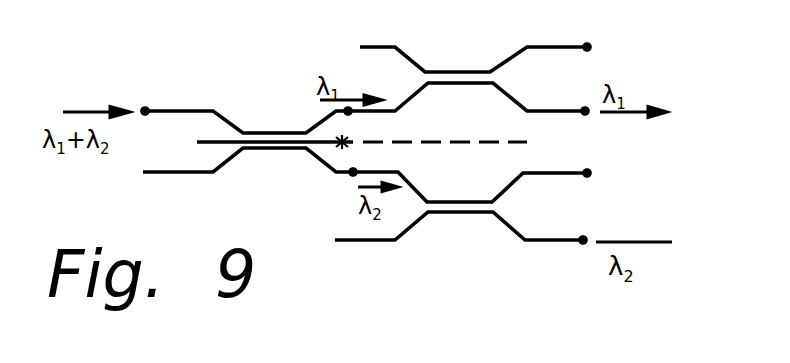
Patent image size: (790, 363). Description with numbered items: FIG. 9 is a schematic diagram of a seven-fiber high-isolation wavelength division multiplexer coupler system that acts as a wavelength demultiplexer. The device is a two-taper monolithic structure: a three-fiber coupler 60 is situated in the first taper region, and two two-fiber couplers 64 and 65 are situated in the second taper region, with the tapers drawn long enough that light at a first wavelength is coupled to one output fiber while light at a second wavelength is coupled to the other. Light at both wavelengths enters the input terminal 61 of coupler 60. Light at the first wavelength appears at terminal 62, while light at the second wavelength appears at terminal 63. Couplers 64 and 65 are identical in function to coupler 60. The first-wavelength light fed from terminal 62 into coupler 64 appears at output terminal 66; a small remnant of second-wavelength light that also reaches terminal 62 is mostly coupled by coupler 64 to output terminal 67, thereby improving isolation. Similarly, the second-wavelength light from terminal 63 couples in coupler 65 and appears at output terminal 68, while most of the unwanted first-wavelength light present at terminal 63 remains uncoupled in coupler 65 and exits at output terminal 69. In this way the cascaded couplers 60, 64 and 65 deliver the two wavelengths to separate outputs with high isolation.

The three-fiber coupler 60 is at (265, 133).
The input terminal 61 is at (145, 108).
The terminal 62 is at (350, 113).
The terminal 63 is at (350, 176).
The two-fiber coupler 64 is at (457, 72).
The two-fiber coupler 65 is at (455, 212).
The output terminal 66 is at (586, 113).
The output terminal 67 is at (587, 45).
The output terminal 68 is at (582, 244).
The output terminal 69 is at (589, 176).